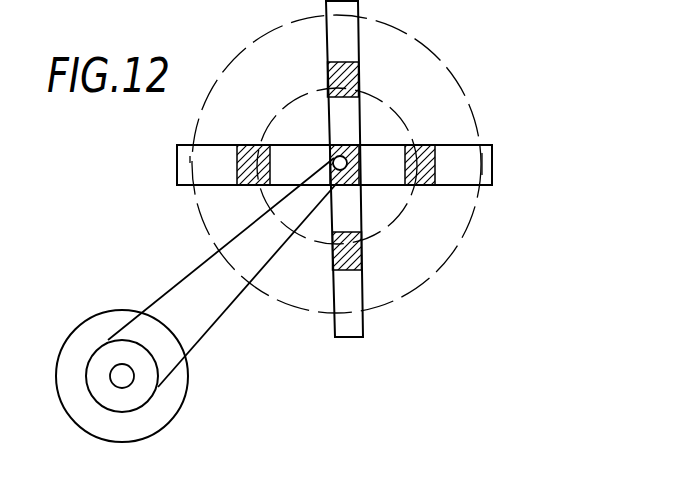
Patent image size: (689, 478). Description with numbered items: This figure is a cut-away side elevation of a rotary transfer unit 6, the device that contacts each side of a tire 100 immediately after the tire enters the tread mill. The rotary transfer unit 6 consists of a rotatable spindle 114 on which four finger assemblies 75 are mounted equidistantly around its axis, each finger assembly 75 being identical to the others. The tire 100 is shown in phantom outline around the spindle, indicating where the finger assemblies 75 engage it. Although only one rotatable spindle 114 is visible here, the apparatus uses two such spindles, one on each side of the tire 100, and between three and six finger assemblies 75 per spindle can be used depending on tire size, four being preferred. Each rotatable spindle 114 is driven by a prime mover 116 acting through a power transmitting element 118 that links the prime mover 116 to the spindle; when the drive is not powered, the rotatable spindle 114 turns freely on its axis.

The rotary transfer unit 6 is at (462, 31).
The tire 100 is at (475, 113).
The rotatable spindle 114 is at (492, 165).
The finger assembly 75 is at (359, 73).
The power transmitting element 118 is at (217, 322).
The prime mover 116 is at (178, 402).